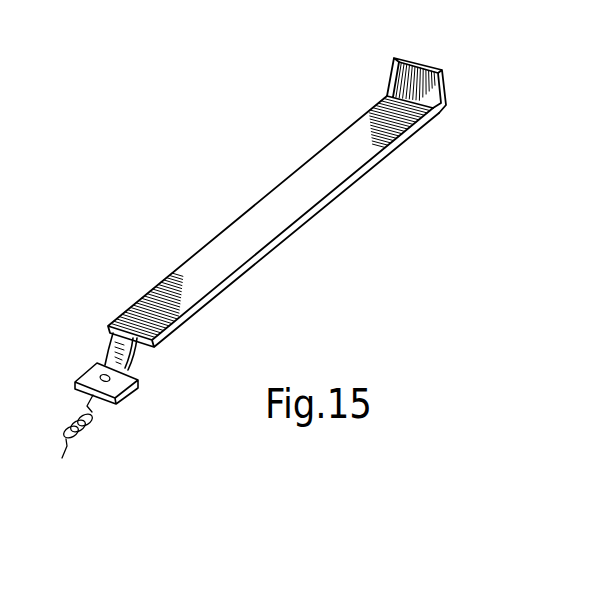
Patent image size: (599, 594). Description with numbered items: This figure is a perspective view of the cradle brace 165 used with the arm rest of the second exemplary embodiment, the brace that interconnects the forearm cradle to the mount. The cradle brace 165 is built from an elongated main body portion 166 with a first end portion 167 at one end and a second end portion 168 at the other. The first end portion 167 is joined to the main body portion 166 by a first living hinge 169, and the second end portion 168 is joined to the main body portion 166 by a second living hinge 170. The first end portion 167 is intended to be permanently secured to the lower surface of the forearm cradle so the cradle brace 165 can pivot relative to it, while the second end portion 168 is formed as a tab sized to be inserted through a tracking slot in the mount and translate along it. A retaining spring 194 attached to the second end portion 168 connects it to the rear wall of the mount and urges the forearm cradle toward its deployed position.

The cradle brace 165 is at (145, 235).
The main body portion 166 is at (260, 213).
The first end portion 167 is at (392, 68).
The first living hinge 169 is at (388, 92).
The second living hinge 170 is at (137, 358).
The second end portion 168 is at (92, 367).
The retaining spring 194 is at (97, 425).